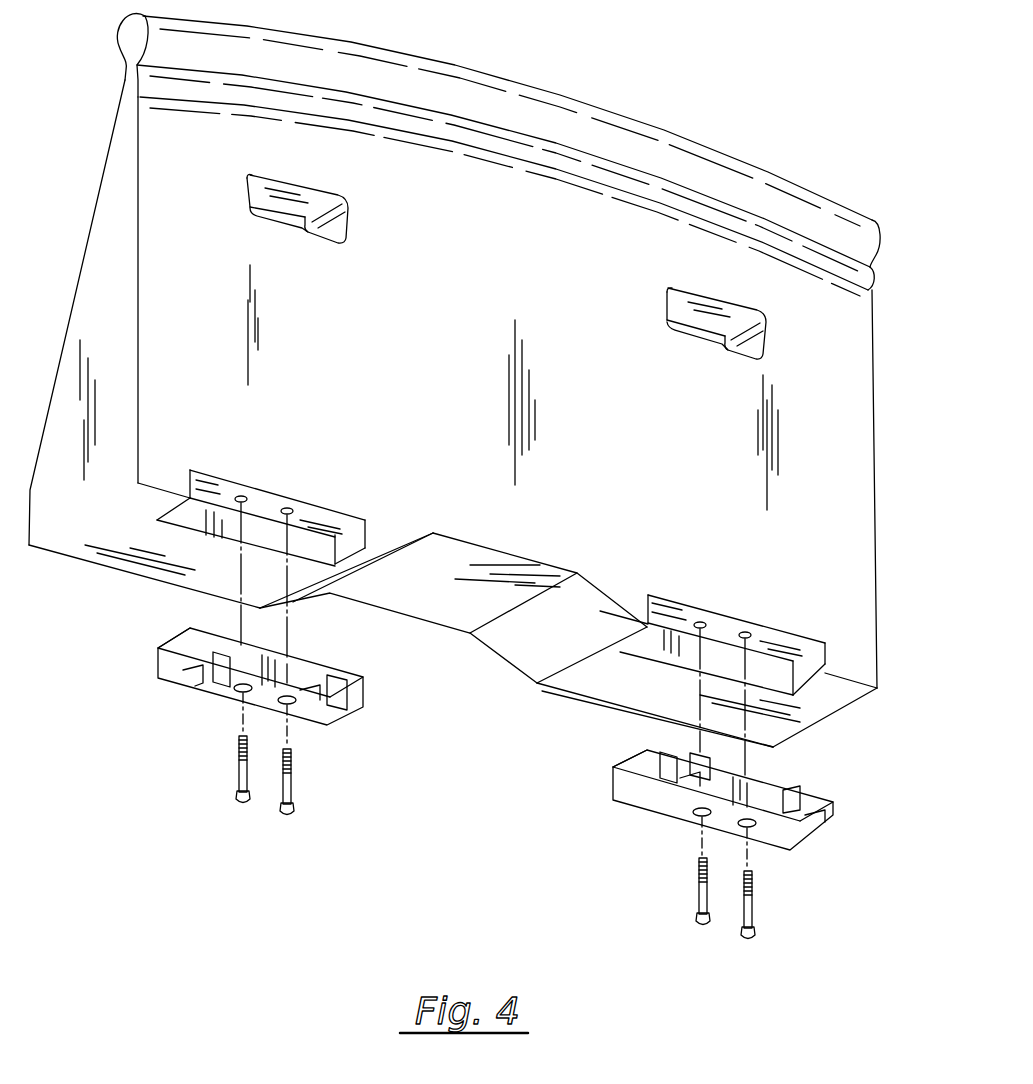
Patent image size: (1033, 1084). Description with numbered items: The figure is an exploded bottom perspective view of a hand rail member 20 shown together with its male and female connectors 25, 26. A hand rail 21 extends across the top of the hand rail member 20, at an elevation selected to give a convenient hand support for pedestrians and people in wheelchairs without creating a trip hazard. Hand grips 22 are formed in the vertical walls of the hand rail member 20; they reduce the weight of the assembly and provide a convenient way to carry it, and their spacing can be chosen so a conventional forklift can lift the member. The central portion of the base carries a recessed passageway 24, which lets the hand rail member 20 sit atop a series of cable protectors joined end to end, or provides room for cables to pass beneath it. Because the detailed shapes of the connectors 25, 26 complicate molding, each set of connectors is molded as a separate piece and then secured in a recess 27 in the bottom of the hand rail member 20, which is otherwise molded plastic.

The hand rail member 20 is at (596, 86).
The hand rail 21 is at (745, 182).
The hand grips 22 is at (667, 300).
The recessed passageway 24 is at (433, 588).
The male connector 25 is at (675, 807).
The female connector 26 is at (208, 690).
The recess 27 is at (221, 497).